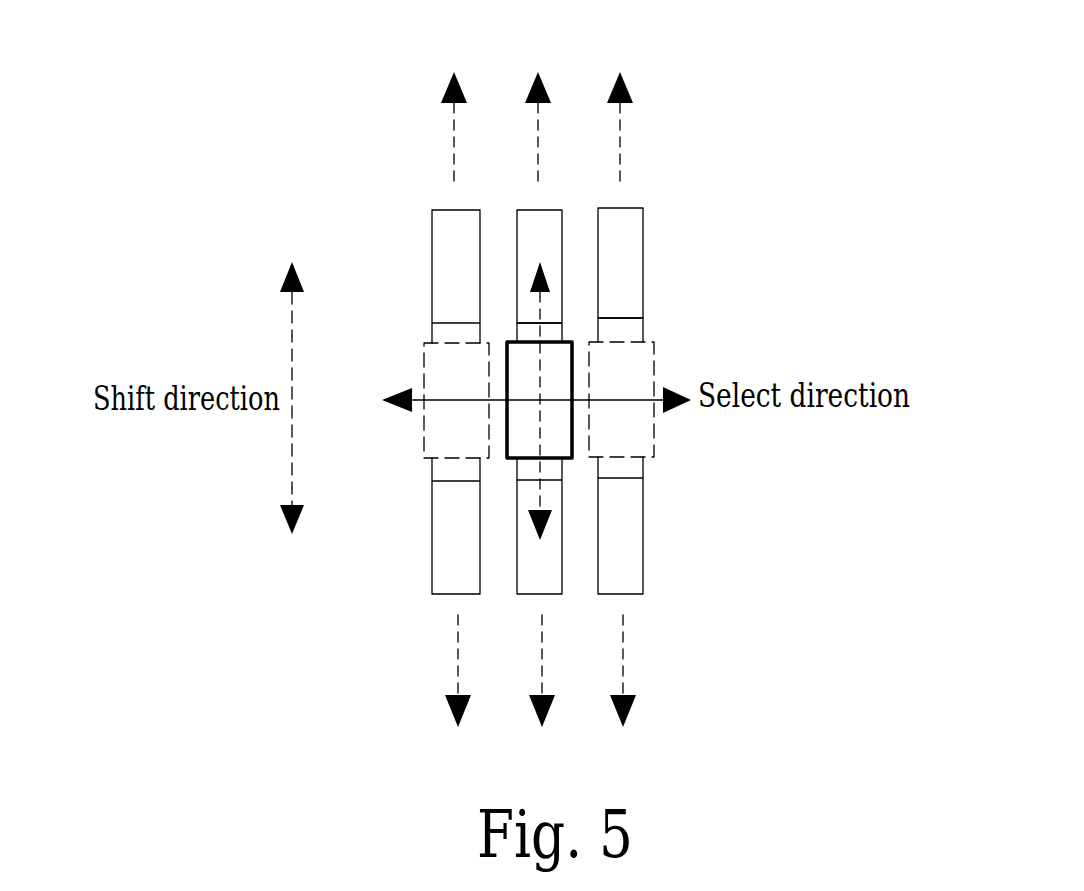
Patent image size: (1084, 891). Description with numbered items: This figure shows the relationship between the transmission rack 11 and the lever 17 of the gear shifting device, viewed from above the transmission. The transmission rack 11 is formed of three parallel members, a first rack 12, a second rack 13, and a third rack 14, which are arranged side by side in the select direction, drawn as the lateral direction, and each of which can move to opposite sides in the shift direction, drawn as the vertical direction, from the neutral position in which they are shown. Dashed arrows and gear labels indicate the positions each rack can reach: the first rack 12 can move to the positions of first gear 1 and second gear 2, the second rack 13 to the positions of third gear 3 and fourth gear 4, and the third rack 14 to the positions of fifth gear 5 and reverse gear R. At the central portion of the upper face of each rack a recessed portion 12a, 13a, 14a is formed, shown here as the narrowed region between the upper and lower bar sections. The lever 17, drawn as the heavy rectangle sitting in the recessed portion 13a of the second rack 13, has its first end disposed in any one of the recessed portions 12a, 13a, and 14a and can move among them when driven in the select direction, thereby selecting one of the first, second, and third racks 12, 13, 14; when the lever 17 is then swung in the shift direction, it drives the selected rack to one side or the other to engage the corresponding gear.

The transmission rack 11 is at (672, 213).
The first rack 12 is at (404, 220).
The recessed portion 12a is at (453, 334).
The second rack 13 is at (556, 190).
The recessed portion 13a is at (548, 334).
The third rack 14 is at (656, 288).
The recessed portion 14a is at (637, 332).
The lever 17 is at (556, 442).
The first gear position 1 is at (454, 99).
The second gear position 2 is at (458, 699).
The third gear position 3 is at (538, 99).
The fourth gear position 4 is at (542, 699).
The fifth gear position 5 is at (620, 99).
The reverse gear position R is at (624, 699).